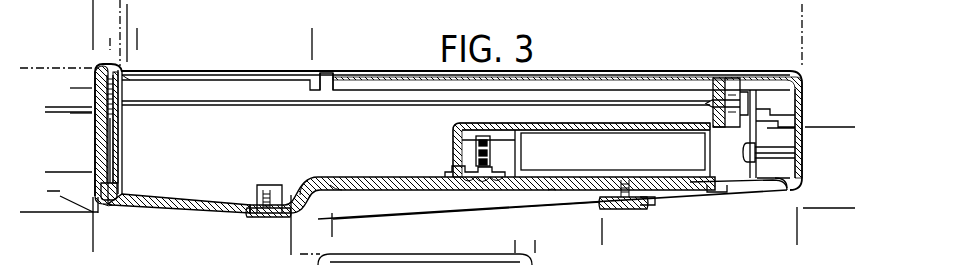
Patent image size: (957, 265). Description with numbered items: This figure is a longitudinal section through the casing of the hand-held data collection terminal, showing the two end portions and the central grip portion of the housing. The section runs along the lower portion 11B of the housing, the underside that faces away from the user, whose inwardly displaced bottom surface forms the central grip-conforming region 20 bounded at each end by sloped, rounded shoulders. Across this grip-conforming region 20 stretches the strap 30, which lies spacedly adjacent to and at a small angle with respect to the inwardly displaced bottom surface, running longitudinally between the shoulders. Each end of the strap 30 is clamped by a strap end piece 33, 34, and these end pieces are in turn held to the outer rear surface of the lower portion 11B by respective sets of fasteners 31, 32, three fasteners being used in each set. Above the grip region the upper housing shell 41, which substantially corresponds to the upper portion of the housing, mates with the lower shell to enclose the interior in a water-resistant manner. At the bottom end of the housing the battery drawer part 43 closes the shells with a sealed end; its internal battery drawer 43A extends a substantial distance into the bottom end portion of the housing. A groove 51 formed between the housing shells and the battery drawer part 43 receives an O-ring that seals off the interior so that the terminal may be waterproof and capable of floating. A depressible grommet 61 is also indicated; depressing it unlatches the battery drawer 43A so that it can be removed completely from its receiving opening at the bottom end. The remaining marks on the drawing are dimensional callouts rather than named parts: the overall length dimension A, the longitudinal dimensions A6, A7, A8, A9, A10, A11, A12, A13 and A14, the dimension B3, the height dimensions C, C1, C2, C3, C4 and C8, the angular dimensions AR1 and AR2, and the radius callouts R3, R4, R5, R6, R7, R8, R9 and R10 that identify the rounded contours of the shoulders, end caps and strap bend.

The lower portion of the housing 11B is at (693, 196).
The central grip-conforming region 20 is at (375, 191).
The strap 30 is at (425, 212).
The set of fasteners 31 is at (262, 222).
The set of fasteners 32 is at (623, 209).
The strap end piece 33 is at (280, 185).
The strap end piece 34 is at (646, 203).
The upper housing shell 41 is at (328, 73).
The battery drawer part 43 is at (803, 103).
The battery drawer 43A is at (496, 127).
The groove 51 is at (718, 79).
The depressible grommet 61 is at (483, 185).
The radius R3 is at (125, 76).
The radius R4 is at (112, 204).
The radius R5 is at (316, 184).
The radius R6 is at (340, 190).
The radius R7 is at (555, 193).
The radius R8 is at (578, 190).
The radius R9 is at (797, 78).
The radius R10 is at (799, 186).
The overall length dimension A is at (135, 13).
The dimension A6 is at (145, 44).
The dimension A7 is at (84, 13).
The dimension A8 is at (127, 62).
The dimension A9 is at (311, 20).
The dimension A10 is at (146, 33).
The dimension A11 is at (282, 243).
The dimension A12 is at (278, 228).
The dimension A13 is at (788, 230).
The dimension A14 is at (82, 130).
The angle AR1 is at (107, 219).
The angle AR2 is at (93, 234).
The dimension B3 is at (544, 245).
The height dimension C is at (30, 203).
The dimension C1 is at (50, 79).
The dimension C2 is at (50, 121).
The dimension C3 is at (79, 76).
The dimension C4 is at (78, 122).
The dimension C8 is at (847, 199).